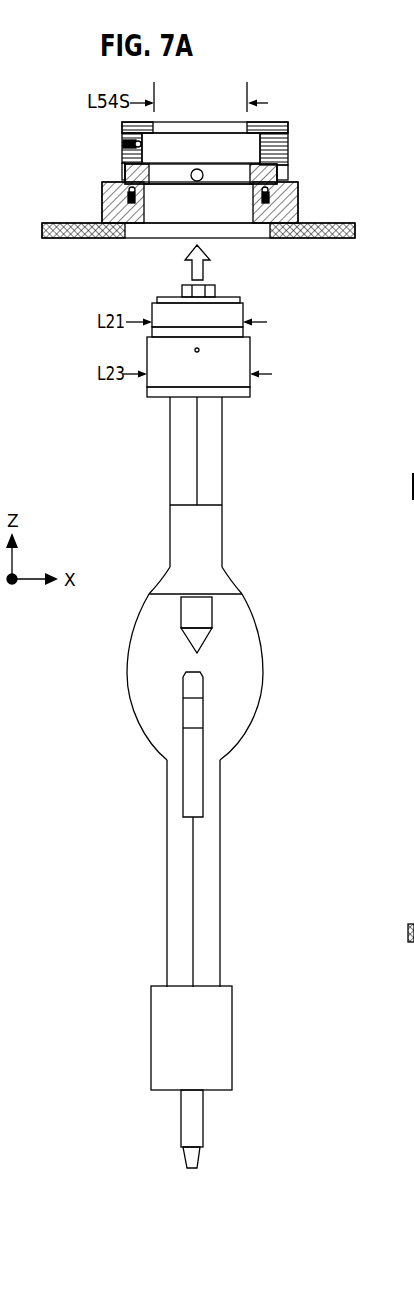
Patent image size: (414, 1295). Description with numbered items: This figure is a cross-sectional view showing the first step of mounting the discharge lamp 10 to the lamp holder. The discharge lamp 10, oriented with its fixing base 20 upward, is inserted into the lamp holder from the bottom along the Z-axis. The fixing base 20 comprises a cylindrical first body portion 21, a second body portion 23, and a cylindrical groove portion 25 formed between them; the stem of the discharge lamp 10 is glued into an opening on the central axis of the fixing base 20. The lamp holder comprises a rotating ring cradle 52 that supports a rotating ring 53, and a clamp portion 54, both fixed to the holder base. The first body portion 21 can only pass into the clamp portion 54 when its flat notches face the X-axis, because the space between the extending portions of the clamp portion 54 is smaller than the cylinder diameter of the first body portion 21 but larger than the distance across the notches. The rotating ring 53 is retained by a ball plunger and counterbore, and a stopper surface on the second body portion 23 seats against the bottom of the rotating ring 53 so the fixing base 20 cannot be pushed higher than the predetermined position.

The discharge lamp 10 is at (263, 668).
The fixing base 20 is at (247, 341).
The first body portion 21 is at (243, 310).
The second body portion 23 is at (250, 353).
The cylindrical groove portion 25 is at (243, 330).
The rotating ring cradle 52 is at (298, 193).
The rotating ring 53 is at (287, 166).
The clamp portion 54 is at (288, 135).